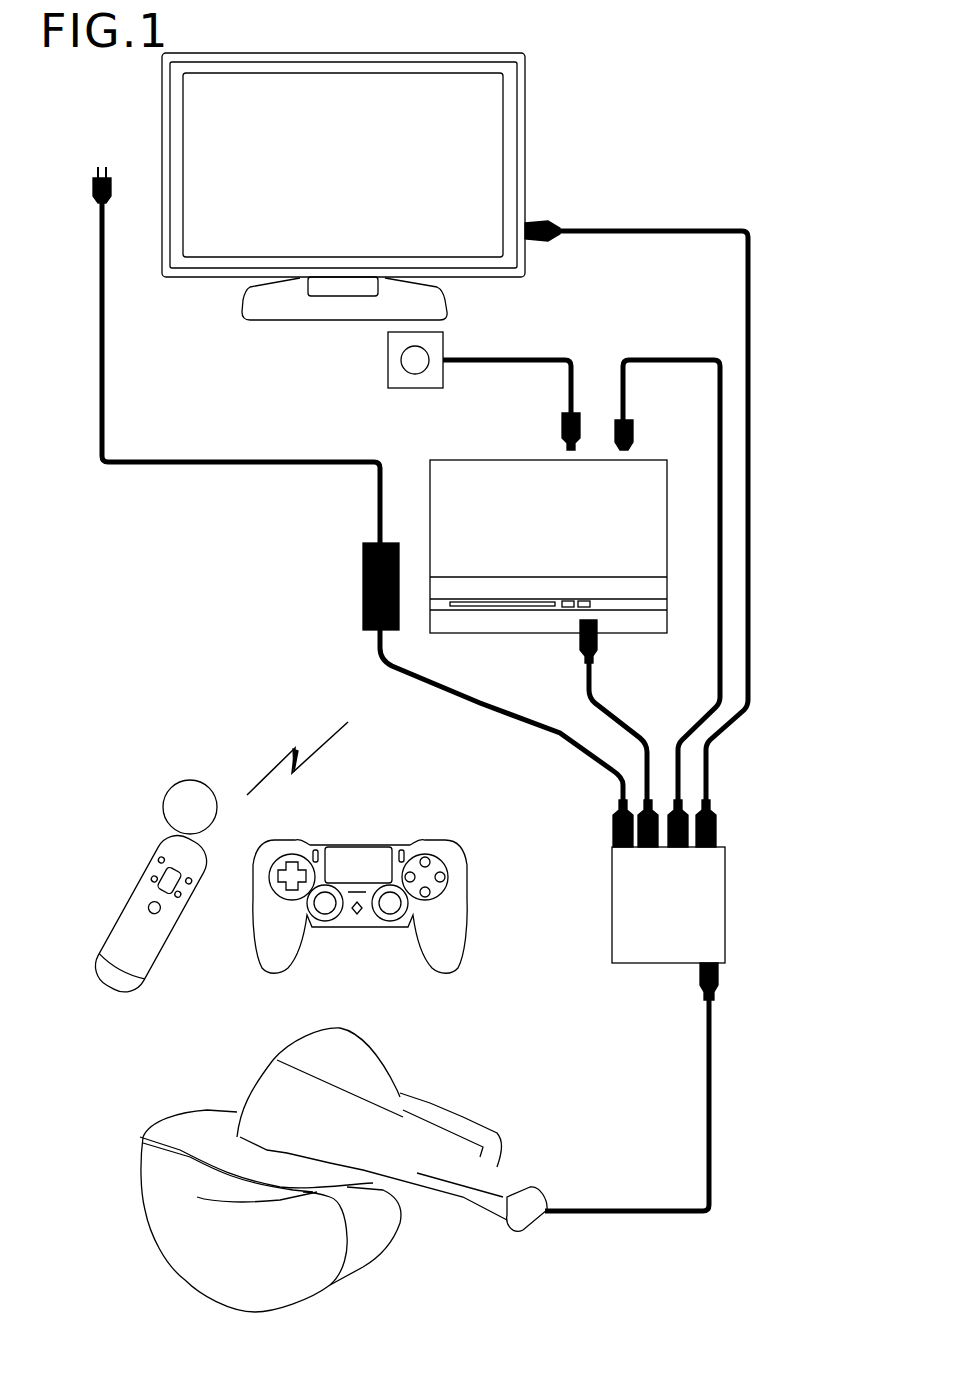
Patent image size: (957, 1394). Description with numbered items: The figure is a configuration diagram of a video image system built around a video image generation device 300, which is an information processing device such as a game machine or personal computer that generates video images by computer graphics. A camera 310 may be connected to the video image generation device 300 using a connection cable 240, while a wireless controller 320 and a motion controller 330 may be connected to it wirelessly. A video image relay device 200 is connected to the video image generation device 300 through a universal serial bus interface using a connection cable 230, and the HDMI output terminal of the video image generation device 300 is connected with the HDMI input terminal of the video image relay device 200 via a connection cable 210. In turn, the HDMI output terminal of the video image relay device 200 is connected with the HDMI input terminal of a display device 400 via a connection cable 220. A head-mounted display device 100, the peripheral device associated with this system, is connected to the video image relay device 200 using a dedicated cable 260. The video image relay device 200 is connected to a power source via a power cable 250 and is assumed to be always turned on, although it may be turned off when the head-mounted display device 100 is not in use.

The head-mounted display device 100 is at (150, 1237).
The video image relay device 200 is at (728, 905).
The connection cable 210 is at (673, 363).
The connection cable 220 is at (716, 228).
The connection cable 230 is at (583, 683).
The connection cable 240 is at (511, 405).
The power cable 250 is at (147, 467).
The dedicated cable 260 is at (712, 1100).
The video image generation device 300 is at (465, 457).
The camera 310 is at (387, 360).
The wireless controller 320 is at (470, 910).
The motion controller 330 is at (95, 955).
The display device 400 is at (343, 52).